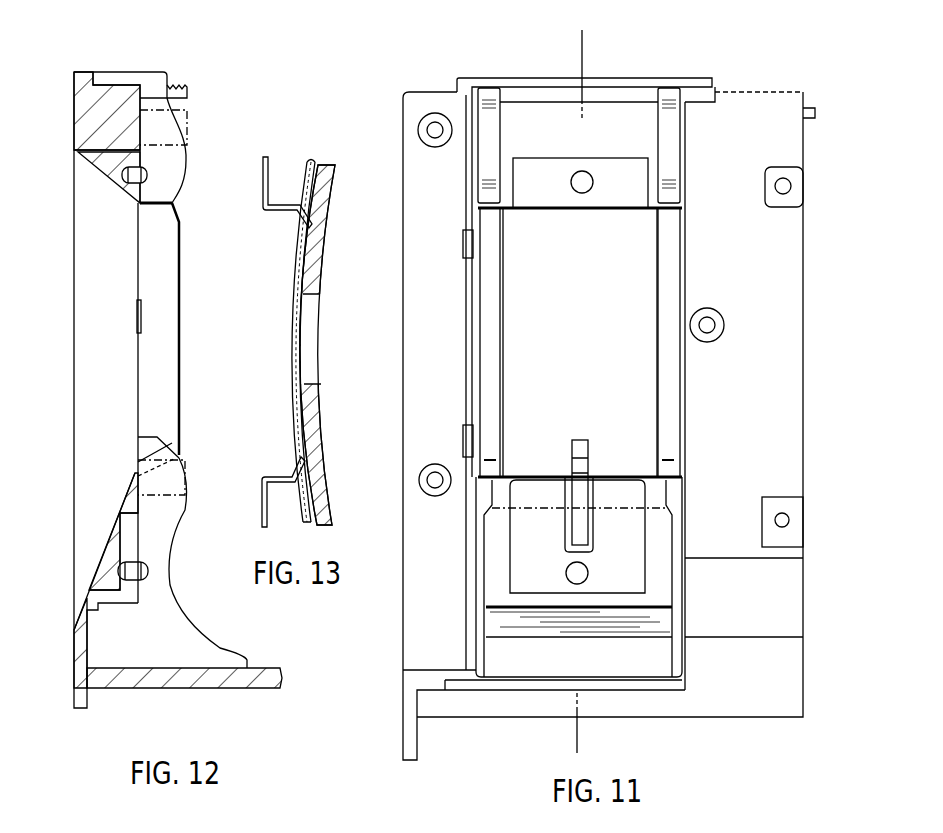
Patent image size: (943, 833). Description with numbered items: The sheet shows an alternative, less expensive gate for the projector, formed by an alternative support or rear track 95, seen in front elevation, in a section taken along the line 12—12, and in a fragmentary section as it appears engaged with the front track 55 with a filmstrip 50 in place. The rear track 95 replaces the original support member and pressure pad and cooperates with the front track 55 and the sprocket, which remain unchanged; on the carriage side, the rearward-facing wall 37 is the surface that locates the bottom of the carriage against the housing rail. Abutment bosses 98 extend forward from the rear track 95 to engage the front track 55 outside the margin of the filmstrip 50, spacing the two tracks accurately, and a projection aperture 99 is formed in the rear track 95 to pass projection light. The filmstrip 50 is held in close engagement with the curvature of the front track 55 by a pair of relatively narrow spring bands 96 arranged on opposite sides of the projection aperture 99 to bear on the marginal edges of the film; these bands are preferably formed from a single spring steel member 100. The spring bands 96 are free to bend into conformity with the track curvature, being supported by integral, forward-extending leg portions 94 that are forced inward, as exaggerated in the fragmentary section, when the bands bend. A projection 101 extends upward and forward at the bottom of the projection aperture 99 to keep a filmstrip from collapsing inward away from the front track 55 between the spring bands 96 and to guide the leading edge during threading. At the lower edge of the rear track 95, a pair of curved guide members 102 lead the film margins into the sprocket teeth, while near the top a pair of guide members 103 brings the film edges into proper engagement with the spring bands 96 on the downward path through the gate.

In FIG. 11, the section line 12— 12 is at (570, 42).
In FIG. 12, the rearward-facing wall 37 is at (74, 668).
In FIG. 13, the filmstrip 50 is at (311, 160).
In FIG. 13, the front track 55 is at (318, 448).
In FIG. 12, the leg portions 94 is at (149, 207).
In FIG. 13, the leg portions 94 is at (288, 205).
In FIG. 12, the rear track 95 is at (206, 247).
In FIG. 11, the rear track 95 is at (395, 312).
In FIG. 12, the spring bands 96 is at (180, 402).
In FIG. 13, the spring bands 96 is at (292, 336).
In FIG. 11, the spring bands 96 is at (505, 372).
In FIG. 12, the abutment bosses 98 is at (187, 127).
In FIG. 11, the abutment bosses 98 is at (419, 135).
In FIG. 12, the projection aperture 99 is at (137, 272).
In FIG. 11, the projection aperture 99 is at (505, 312).
In FIG. 11, the spring steel member 100 is at (640, 552).
In FIG. 12, the projection 101 is at (157, 438).
In FIG. 11, the projection 101 is at (586, 450).
In FIG. 12, the curved guide members 102 is at (155, 649).
In FIG. 11, the curved guide members 102 is at (476, 612).
In FIG. 12, the guide members 103 is at (187, 166).
In FIG. 11, the guide members 103 is at (500, 143).